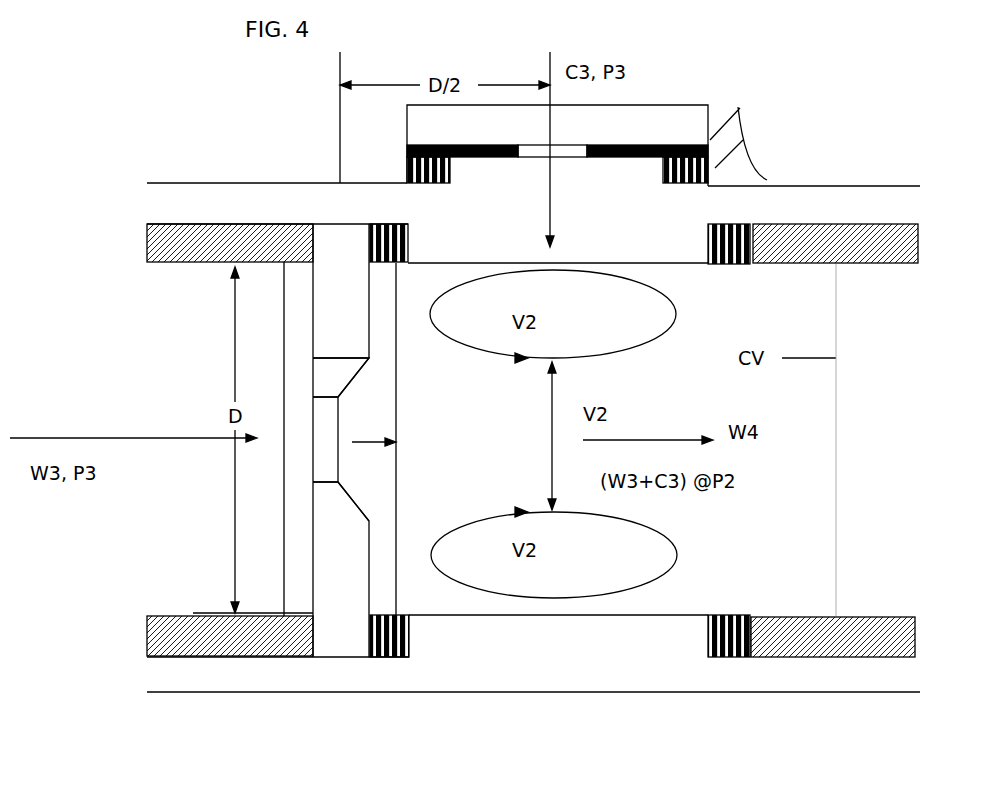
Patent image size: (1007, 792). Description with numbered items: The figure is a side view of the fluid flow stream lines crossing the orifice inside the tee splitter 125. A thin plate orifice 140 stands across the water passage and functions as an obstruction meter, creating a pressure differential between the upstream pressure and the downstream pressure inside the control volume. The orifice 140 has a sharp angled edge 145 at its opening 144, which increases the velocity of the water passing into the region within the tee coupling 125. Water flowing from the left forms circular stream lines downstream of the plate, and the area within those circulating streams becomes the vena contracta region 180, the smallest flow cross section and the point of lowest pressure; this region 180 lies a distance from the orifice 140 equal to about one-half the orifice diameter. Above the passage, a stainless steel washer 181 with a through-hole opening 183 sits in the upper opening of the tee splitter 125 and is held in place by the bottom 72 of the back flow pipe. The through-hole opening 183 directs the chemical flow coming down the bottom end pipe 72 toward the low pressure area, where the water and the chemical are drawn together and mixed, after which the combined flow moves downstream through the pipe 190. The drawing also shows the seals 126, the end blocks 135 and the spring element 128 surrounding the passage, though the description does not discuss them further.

The bottom of pipe 72 is at (682, 120).
The tee splitter 125 is at (517, 197).
The seals 126 is at (390, 657).
The spring 128 is at (732, 178).
The housing end blocks 135 is at (217, 633).
The thin plate orifice 140 is at (213, 489).
The opening 144 is at (325, 393).
The sharp angled edge 145 is at (325, 482).
The vena contracta region 180 is at (553, 478).
The stainless steel washer 181 is at (633, 143).
The through-hole opening 183 is at (580, 148).
The pipe 190 is at (800, 240).